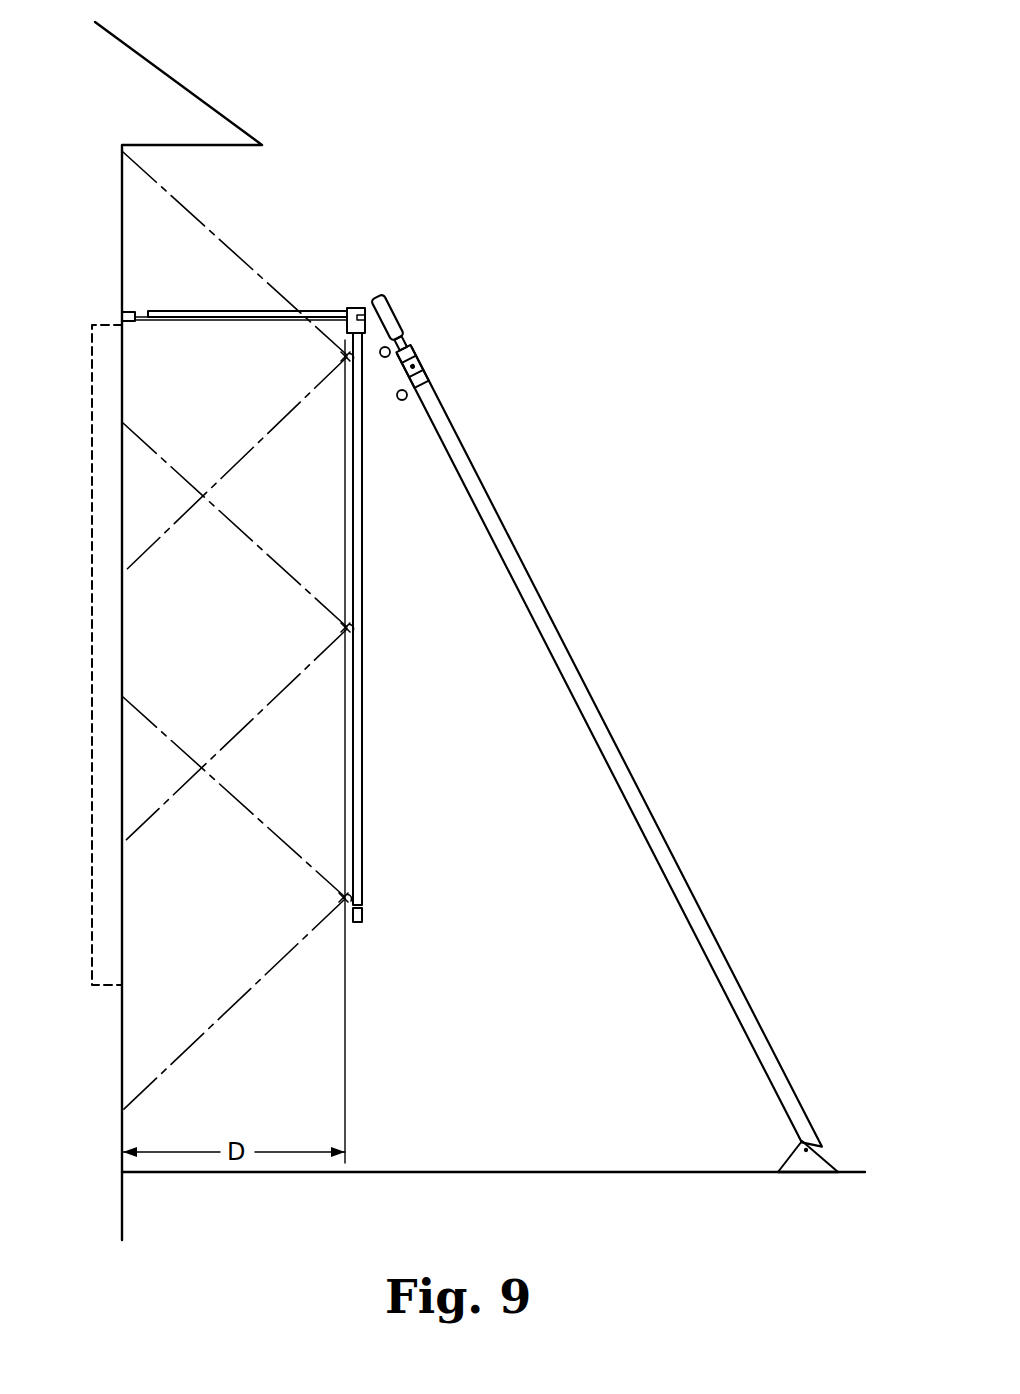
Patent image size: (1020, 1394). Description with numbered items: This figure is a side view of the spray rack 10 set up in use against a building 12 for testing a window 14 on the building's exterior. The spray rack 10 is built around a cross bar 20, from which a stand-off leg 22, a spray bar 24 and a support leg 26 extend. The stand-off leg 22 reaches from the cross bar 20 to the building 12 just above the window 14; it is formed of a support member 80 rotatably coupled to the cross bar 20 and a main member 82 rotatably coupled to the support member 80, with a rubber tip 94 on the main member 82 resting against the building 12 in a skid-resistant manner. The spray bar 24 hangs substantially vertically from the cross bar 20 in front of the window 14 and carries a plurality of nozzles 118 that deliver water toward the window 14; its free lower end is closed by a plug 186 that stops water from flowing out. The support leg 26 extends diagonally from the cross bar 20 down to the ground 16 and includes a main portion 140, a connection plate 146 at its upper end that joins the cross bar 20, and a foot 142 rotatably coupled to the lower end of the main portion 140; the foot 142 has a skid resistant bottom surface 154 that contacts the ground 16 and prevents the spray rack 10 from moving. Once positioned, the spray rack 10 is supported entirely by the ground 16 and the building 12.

The spray rack 10 is at (447, 323).
The building 12 is at (122, 222).
The window 14 is at (100, 440).
The ground 16 is at (598, 1172).
The cross bar 20 is at (370, 314).
The stand-off leg 22 is at (229, 304).
The spray bar 24 is at (362, 764).
The support leg 26 is at (609, 750).
The support member 80 is at (176, 311).
The main member 82 is at (222, 320).
The rubber tip 94 is at (125, 313).
The nozzles 118 is at (349, 632).
The main portion 140 is at (596, 680).
The foot 142 is at (817, 1157).
The connection plate 146 is at (375, 292).
The skid resistant bottom surface 154 is at (800, 1173).
The plug 186 is at (363, 913).